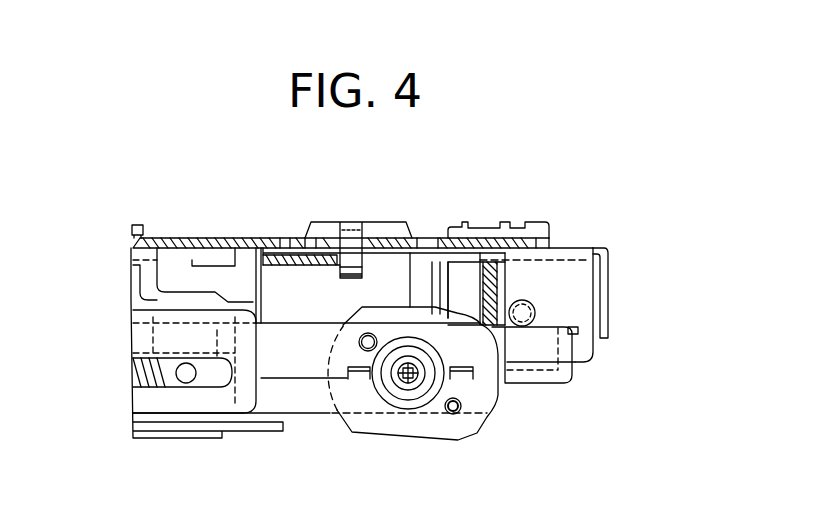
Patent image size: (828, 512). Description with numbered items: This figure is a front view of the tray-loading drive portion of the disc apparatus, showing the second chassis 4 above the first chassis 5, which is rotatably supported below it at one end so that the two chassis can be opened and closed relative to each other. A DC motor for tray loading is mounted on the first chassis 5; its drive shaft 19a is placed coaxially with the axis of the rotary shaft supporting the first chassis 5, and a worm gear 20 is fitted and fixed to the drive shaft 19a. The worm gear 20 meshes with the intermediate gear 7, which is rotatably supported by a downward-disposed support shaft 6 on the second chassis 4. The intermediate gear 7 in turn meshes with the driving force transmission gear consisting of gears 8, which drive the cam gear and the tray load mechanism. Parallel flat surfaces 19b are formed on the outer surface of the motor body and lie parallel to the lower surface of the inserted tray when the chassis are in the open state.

The second chassis 4 is at (567, 272).
The first chassis 5 is at (557, 383).
The support shaft 6 is at (468, 287).
The intermediate gear 7 is at (503, 268).
The gears 8 is at (285, 255).
The drive shaft 19a is at (408, 378).
The flat surfaces 19b is at (383, 307).
The worm gear 20 is at (427, 408).